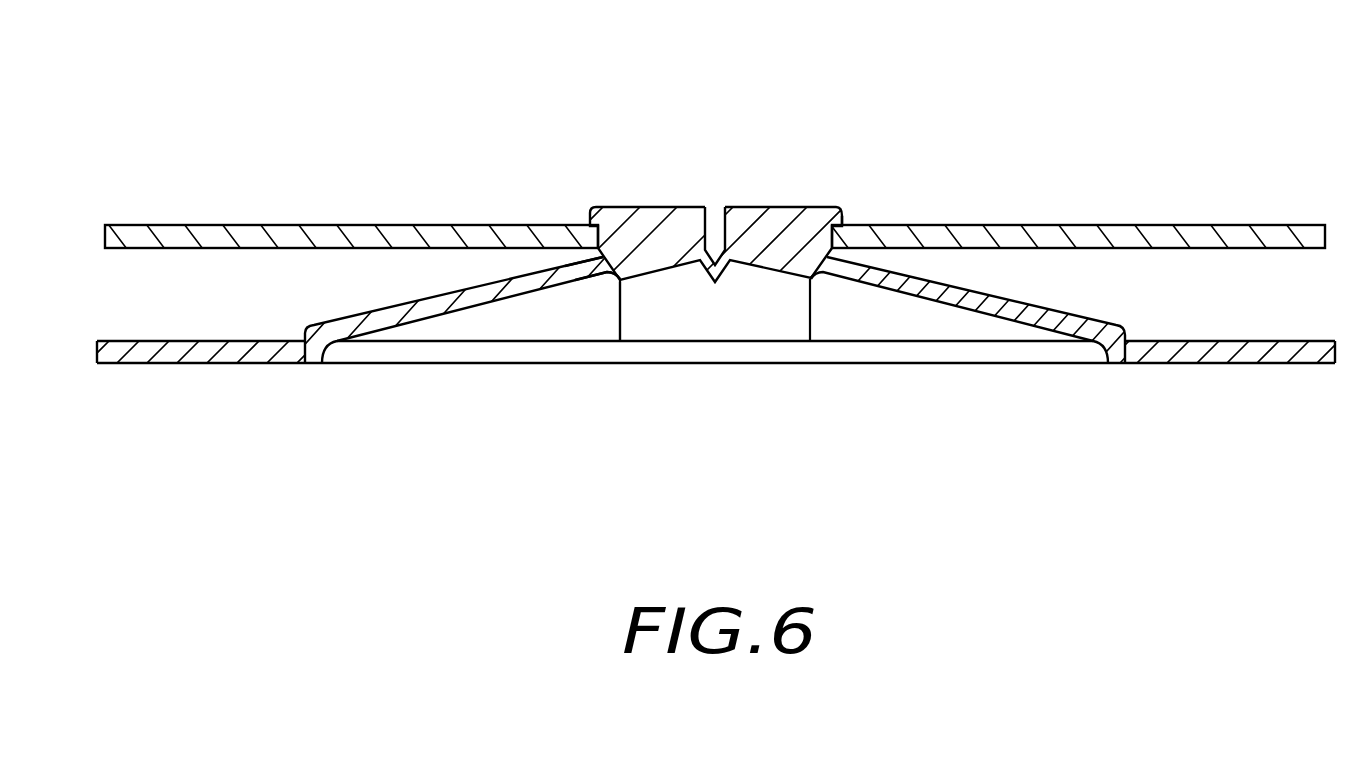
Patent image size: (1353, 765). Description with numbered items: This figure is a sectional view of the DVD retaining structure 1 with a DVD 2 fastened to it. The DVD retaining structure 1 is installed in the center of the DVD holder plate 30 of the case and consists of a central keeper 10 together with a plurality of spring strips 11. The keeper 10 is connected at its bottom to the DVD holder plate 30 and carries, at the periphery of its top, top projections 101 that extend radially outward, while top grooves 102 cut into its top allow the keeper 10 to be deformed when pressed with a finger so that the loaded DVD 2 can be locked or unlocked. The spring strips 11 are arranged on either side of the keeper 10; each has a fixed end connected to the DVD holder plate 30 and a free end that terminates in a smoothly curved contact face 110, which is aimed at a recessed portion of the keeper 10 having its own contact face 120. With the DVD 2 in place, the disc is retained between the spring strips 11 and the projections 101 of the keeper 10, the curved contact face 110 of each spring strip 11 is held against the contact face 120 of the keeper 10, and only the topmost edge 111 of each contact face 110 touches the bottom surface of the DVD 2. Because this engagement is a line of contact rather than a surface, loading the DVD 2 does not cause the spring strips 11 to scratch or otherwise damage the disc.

The DVD retaining structure 1 is at (622, 170).
The DVD 2 is at (1157, 237).
The keeper 10 is at (767, 217).
The top projection 101 is at (836, 207).
The top groove 102 is at (718, 217).
The spring strip 11 is at (390, 310).
The contact face 110 is at (612, 273).
The topmost edge 111 is at (588, 250).
The contact face 120 is at (622, 276).
The DVD holder plate 30 is at (960, 342).